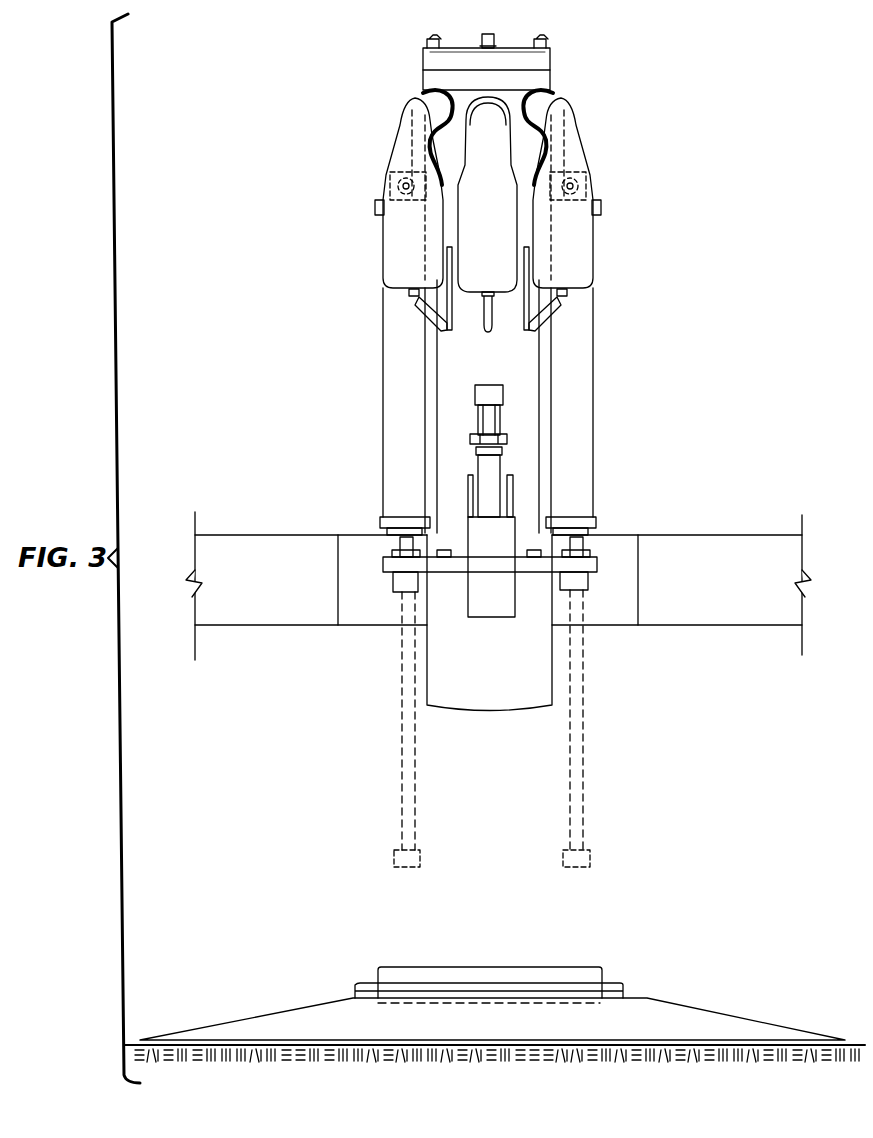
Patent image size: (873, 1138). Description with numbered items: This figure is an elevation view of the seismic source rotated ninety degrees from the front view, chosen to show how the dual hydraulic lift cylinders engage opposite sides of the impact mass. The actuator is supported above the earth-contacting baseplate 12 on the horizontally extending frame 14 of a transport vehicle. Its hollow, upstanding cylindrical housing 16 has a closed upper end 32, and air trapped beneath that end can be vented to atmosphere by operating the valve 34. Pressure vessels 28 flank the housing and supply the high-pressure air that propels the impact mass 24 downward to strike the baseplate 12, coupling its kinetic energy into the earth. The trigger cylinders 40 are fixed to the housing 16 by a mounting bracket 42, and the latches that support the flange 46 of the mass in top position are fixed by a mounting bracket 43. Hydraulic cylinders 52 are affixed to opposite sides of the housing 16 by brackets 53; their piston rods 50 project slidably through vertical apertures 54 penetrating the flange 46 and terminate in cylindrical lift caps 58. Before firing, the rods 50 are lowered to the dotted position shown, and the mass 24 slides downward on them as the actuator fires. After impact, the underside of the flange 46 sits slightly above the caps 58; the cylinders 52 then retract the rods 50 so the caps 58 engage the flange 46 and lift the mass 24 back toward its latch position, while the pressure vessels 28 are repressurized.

The baseplate 12 is at (730, 1020).
The frame 14 is at (238, 548).
The housing 16 is at (553, 87).
The impact mass 24 is at (500, 716).
The pressure vessels 28 is at (430, 99).
The closed upper end 32 is at (456, 60).
The valve 34 is at (493, 44).
The trigger cylinders 40 is at (486, 468).
The mounting bracket 42 is at (495, 395).
The mounting bracket 43 is at (497, 545).
The flange 46 is at (598, 565).
The piston rods 50 is at (402, 543).
The hydraulic cylinders 52 is at (598, 344).
The brackets 53 is at (578, 141).
The vertical apertures 54 is at (395, 584).
The lift caps 58 is at (587, 583).